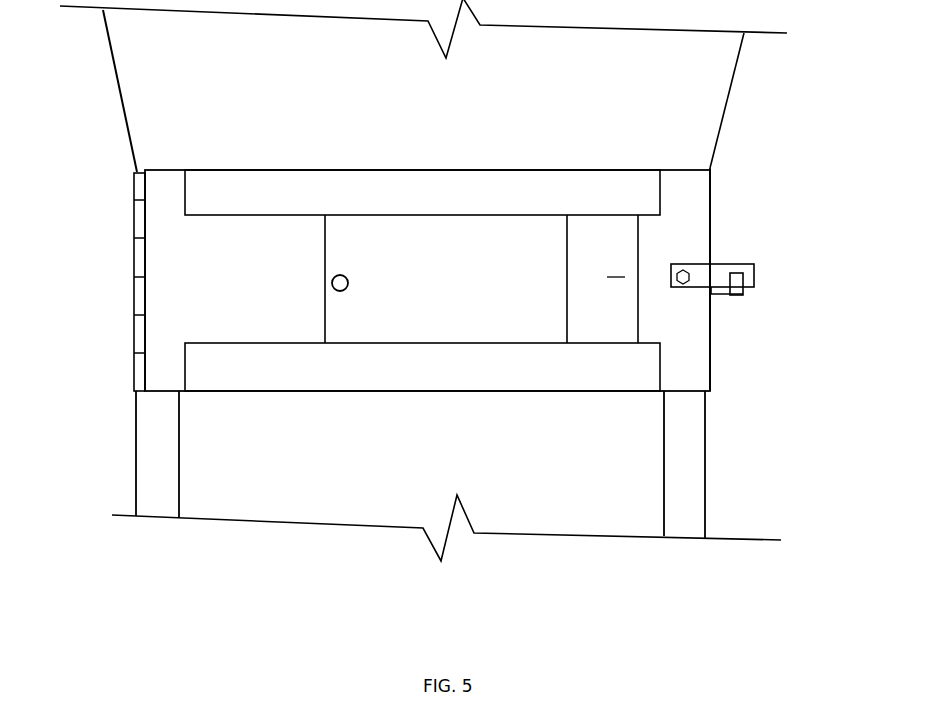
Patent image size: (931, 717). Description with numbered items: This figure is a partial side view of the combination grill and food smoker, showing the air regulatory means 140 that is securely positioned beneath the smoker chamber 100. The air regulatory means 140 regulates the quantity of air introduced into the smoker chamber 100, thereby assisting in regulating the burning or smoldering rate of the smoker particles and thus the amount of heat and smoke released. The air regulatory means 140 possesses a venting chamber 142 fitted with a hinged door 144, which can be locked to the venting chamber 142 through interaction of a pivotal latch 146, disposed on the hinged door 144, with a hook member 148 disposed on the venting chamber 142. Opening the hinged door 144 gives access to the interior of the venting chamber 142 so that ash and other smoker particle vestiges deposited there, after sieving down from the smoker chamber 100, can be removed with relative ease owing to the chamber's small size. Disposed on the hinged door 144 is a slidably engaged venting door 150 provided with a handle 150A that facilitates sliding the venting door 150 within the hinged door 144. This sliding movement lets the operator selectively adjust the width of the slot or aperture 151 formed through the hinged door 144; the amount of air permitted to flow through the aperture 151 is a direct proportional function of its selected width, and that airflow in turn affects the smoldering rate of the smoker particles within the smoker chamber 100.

The smoker chamber 100 is at (157, 113).
The air regulatory means 140 is at (147, 368).
The venting chamber 142 is at (697, 340).
The hinged door 144 is at (190, 287).
The pivotal latch 146 is at (722, 270).
The hook member 148 is at (738, 296).
The venting door 150 is at (490, 237).
The handle 150A is at (348, 275).
The aperture 151 is at (607, 277).